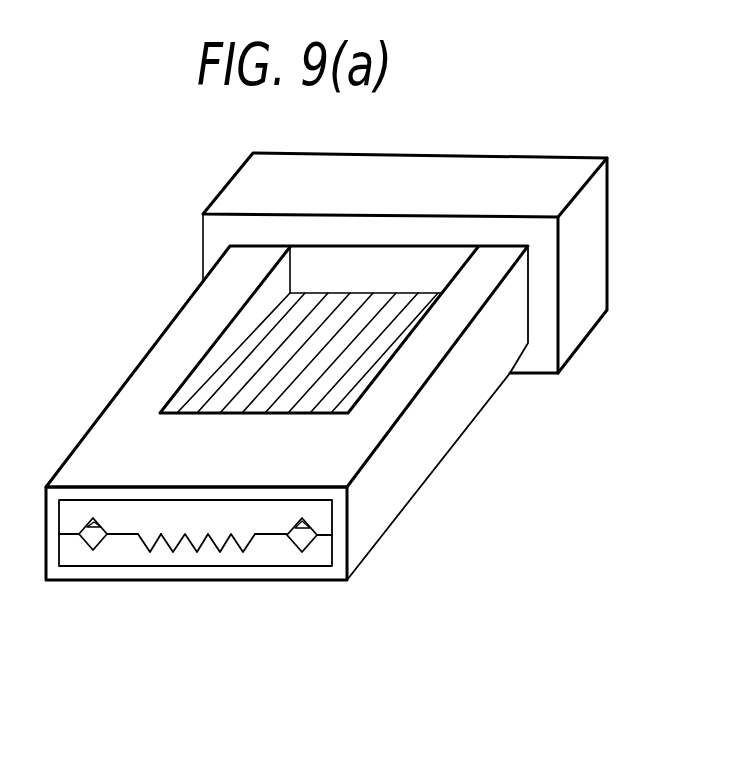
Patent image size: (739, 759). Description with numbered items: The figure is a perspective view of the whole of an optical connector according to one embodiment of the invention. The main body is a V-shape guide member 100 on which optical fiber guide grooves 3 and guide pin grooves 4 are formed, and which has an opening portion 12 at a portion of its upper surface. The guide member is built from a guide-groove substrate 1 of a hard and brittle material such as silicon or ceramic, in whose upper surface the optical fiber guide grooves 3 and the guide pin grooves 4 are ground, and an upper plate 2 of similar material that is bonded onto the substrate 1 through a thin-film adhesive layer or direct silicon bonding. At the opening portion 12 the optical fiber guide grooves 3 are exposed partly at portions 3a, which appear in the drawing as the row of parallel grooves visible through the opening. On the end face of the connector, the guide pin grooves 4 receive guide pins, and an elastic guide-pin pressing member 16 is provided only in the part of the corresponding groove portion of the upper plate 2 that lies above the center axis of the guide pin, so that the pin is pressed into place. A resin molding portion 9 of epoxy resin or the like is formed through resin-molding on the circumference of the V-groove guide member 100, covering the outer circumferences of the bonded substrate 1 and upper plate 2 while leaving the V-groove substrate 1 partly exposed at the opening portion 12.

The guide-groove substrate 1 is at (217, 558).
The upper plate 2 is at (82, 510).
The optical fiber guide grooves 3 is at (148, 547).
The exposed portions of the optical fiber guide grooves 3a is at (355, 380).
The guide pin grooves 4 is at (92, 547).
The resin molding portion 9 is at (485, 379).
The opening portion 12 is at (210, 403).
The elastic guide-pin pressing member 16 is at (310, 521).
The V-shape guide member 100 is at (293, 572).